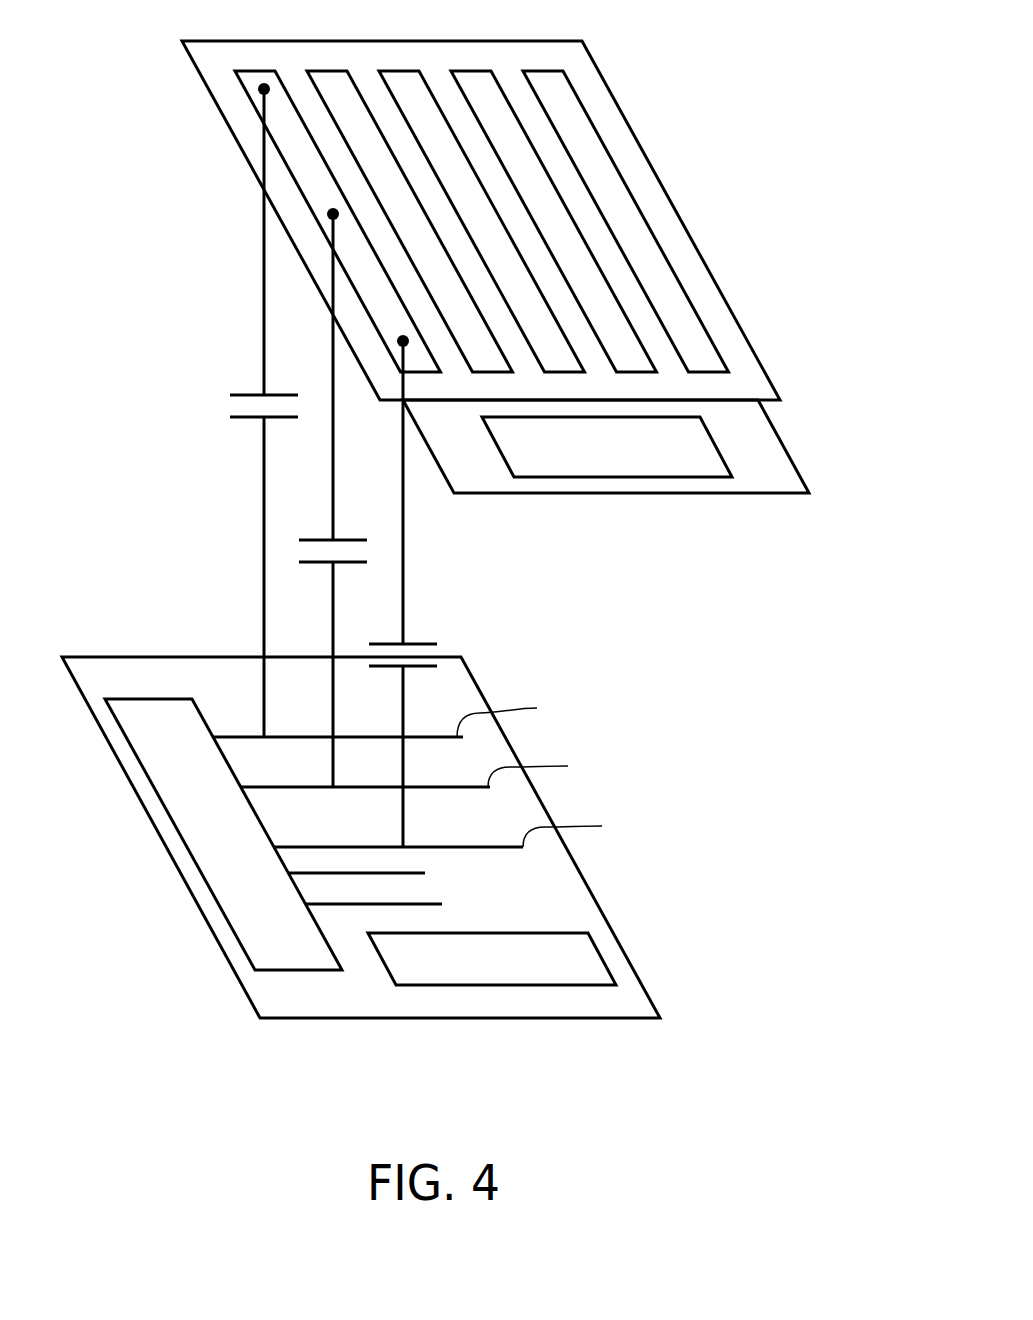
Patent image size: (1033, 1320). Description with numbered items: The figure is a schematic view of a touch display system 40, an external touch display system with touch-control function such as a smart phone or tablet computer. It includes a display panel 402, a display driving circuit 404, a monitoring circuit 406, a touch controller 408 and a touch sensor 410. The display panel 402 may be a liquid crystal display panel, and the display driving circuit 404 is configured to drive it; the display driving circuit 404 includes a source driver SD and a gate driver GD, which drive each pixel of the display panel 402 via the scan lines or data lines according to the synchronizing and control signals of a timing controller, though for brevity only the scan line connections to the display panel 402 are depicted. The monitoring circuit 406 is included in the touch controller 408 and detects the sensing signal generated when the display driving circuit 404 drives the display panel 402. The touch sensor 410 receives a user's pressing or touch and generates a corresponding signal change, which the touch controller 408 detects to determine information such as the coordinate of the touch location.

The touch display system 40 is at (449, 572).
The display panel 402 is at (392, 900).
The display driving circuit 404 is at (360, 921).
The monitoring circuit 406 is at (622, 477).
The touch controller 408 is at (778, 493).
The touch sensor 410 is at (737, 342).
The gate driver GD is at (332, 970).
The source driver SD is at (492, 1009).